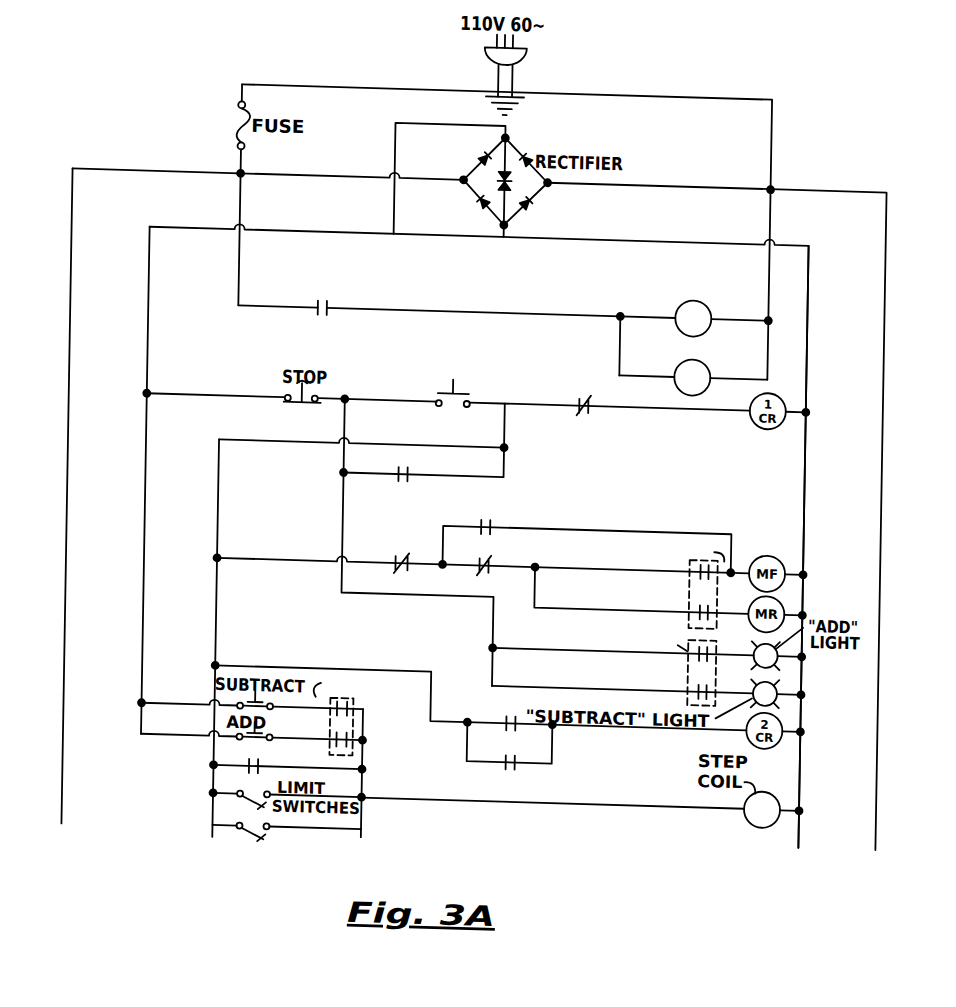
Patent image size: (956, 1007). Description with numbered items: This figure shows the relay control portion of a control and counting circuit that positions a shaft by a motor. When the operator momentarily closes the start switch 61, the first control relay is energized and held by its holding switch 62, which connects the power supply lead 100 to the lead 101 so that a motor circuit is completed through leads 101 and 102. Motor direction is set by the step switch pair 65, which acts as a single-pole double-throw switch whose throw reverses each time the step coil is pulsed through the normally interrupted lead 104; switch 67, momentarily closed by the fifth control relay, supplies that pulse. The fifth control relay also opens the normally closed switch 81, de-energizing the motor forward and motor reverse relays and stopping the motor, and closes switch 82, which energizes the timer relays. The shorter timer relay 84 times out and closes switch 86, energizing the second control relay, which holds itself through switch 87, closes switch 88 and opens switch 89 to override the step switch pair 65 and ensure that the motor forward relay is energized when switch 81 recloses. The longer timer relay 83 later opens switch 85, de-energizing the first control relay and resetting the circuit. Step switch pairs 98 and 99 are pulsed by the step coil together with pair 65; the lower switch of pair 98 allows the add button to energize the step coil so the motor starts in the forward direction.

The start switch 61 is at (440, 408).
The holding switch 62 is at (410, 481).
The step switch pair 65 is at (690, 580).
The switch 67 is at (268, 771).
The normally closed switch 81 is at (398, 574).
The switch 82 is at (326, 318).
The timer relay 83 is at (674, 318).
The timer relay 84 is at (674, 377).
The switch 85 is at (577, 409).
The switch 86 is at (509, 729).
The switch 87 is at (510, 768).
The switch 88 is at (492, 535).
The switch 89 is at (482, 573).
The step switch pair 98 is at (334, 734).
The step switch pair 99 is at (689, 664).
The power supply lead 100 is at (154, 403).
The lead 101 is at (232, 509).
The lead 102 is at (805, 507).
The lead 104 is at (591, 800).